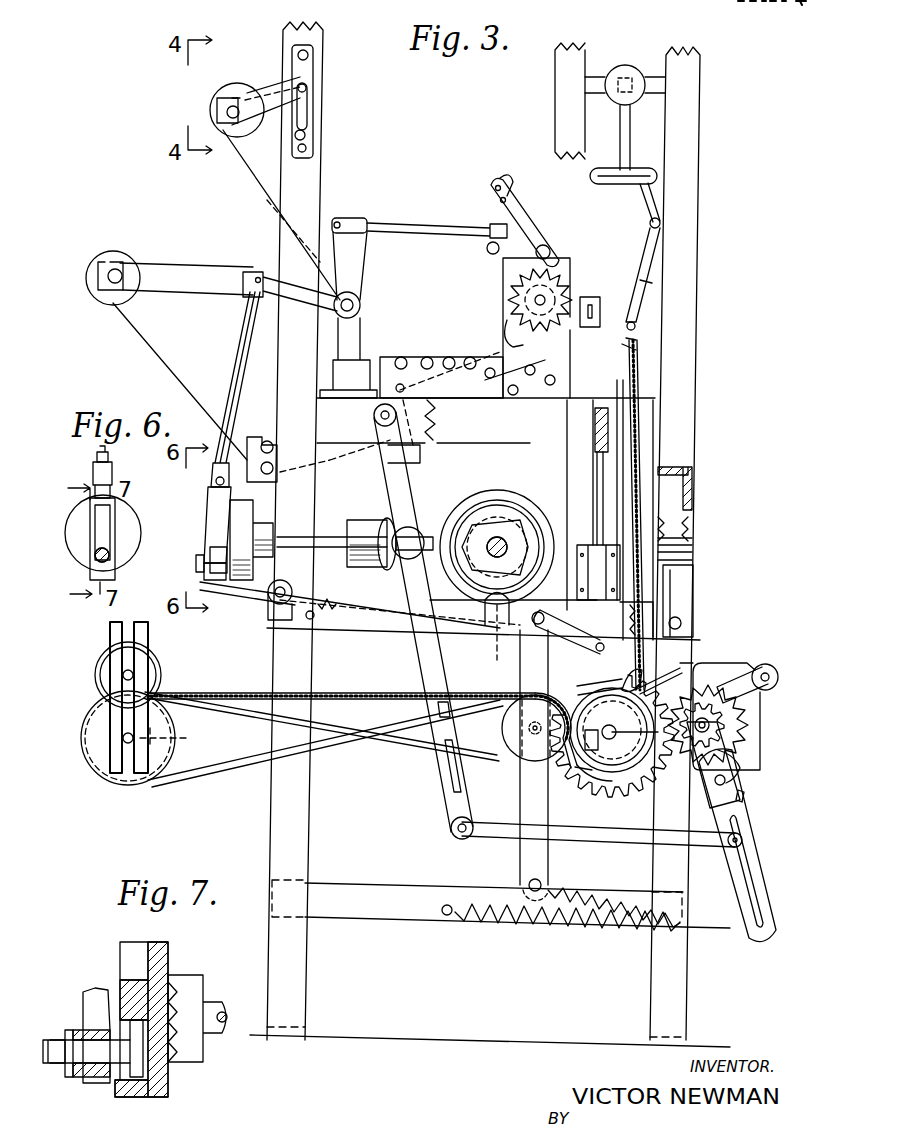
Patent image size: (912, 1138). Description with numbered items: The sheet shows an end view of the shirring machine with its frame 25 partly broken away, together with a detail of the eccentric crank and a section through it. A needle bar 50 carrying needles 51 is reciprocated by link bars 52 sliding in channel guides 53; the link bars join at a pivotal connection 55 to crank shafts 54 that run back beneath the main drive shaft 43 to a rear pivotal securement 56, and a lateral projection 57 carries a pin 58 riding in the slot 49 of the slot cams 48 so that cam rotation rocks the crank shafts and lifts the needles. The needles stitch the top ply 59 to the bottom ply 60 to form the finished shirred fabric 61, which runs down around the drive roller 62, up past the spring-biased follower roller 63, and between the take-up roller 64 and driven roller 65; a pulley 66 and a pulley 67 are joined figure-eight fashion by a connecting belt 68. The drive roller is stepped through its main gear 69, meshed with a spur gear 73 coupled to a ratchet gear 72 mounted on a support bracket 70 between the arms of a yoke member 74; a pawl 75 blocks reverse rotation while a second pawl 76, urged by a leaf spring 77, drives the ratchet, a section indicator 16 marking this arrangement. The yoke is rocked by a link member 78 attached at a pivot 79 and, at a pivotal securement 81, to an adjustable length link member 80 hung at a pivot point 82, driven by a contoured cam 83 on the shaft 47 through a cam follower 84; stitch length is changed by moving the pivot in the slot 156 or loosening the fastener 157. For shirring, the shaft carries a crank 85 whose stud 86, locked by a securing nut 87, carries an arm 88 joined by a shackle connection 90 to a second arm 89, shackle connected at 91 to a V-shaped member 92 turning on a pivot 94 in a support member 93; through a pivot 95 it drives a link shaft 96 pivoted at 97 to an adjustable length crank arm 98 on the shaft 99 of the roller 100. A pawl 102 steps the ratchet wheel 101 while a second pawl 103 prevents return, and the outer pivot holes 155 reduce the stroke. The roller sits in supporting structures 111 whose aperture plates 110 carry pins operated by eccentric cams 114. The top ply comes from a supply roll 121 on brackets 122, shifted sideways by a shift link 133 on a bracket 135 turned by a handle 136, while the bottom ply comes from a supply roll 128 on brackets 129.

In FIG. 3, the drum 16 is at (790, 665).
In FIG. 3, the frame 25 is at (680, 410).
In FIG. 3, the main drive shaft 43 is at (497, 537).
In FIG. 3, the shaft 47 is at (333, 543).
In FIG. 7, the shaft 47 is at (212, 1005).
In FIG. 3, the slot cams 48 is at (477, 497).
In FIG. 3, the cam slot 49 is at (535, 528).
In FIG. 3, the needle bar 50 is at (585, 445).
In FIG. 3, the needles 51 is at (590, 395).
In FIG. 3, the link bars 52 is at (592, 488).
In FIG. 3, the channel guides 53 is at (598, 572).
In FIG. 3, the crank shafts 54 is at (390, 628).
In FIG. 3, the pivotal connection 55 is at (596, 652).
In FIG. 3, the pivotal securement 56 is at (272, 606).
In FIG. 3, the crank shaft lateral projection 57 is at (470, 640).
In FIG. 3, the pin 58 is at (500, 630).
In FIG. 3, the top ply of fabric 59 is at (400, 360).
In FIG. 3, the bottom ply of fabric 60 is at (318, 462).
In FIG. 3, the finished shirred fabric 61 is at (640, 370).
In FIG. 3, the drive roller 62 is at (612, 682).
In FIG. 3, the follower roller 63 is at (518, 748).
In FIG. 3, the take-up roller 64 is at (150, 660).
In FIG. 3, the driven roller 65 is at (160, 730).
In FIG. 3, the pulley 66 is at (648, 685).
In FIG. 3, the pulley 67 is at (95, 752).
In FIG. 3, the connecting belt 68 is at (345, 745).
In FIG. 3, the main gear 69 is at (598, 798).
In FIG. 3, the support bracket 70 is at (715, 662).
In FIG. 3, the ratchet gear 72 is at (735, 710).
In FIG. 3, the spur gear 73 is at (735, 730).
In FIG. 3, the yoke member 74 is at (768, 890).
In FIG. 3, the pawl 75 is at (756, 672).
In FIG. 3, the second pawl 76 is at (728, 781).
In FIG. 3, the leaf spring 77 is at (745, 800).
In FIG. 3, the link member 78 is at (600, 845).
In FIG. 3, the pivot 79 is at (745, 838).
In FIG. 3, the adjustable length link member 80 is at (418, 655).
In FIG. 3, the pivotal securement 81 is at (460, 840).
In FIG. 3, the pivot point 82 is at (373, 417).
In FIG. 3, the contoured cam 83 is at (368, 570).
In FIG. 3, the cam follower 84 is at (415, 512).
In FIG. 3, the crank 85 is at (210, 510).
In FIG. 6, the crank 85 is at (128, 530).
In FIG. 7, the crank 85 is at (168, 960).
In FIG. 3, the stud 86 is at (196, 565).
In FIG. 7, the stud 86 is at (45, 1065).
In FIG. 6, the securing nut 87 is at (95, 560).
In FIG. 7, the securing nut 87 is at (60, 1035).
In FIG. 3, the arm 88 is at (200, 530).
In FIG. 6, the arm 88 is at (90, 540).
In FIG. 7, the arm 88 is at (95, 1000).
In FIG. 3, the second arm 89 is at (232, 348).
In FIG. 6, the second arm 89 is at (95, 456).
In FIG. 3, the shackle connection 90 is at (214, 483).
In FIG. 6, the shackle connection 90 is at (92, 471).
In FIG. 3, the shackle connection 91 is at (253, 270).
In FIG. 3, the V-shaped member 92 is at (348, 258).
In FIG. 3, the support member 93 is at (333, 368).
In FIG. 3, the pivot 94 is at (358, 298).
In FIG. 3, the pivot 95 is at (345, 216).
In FIG. 3, the link shaft 96 is at (408, 225).
In FIG. 3, the pivot 97 is at (560, 232).
In FIG. 3, the adjustable length crank arm 98 is at (535, 250).
In FIG. 3, the roller shaft 99 is at (500, 312).
In FIG. 3, the roller 100 is at (535, 298).
In FIG. 3, the ratchet wheel 101 is at (580, 280).
In FIG. 3, the pawl 102 is at (560, 262).
In FIG. 3, the second pawl 103 is at (500, 338).
In FIG. 3, the aperture plates 110 is at (500, 264).
In FIG. 3, the roller supporting structures 111 is at (508, 398).
In FIG. 3, the cams 114 is at (485, 250).
In FIG. 3, the supply roll 121 is at (226, 96).
In FIG. 3, the brackets 122 is at (262, 118).
In FIG. 3, the supply roll 128 is at (118, 250).
In FIG. 3, the brackets 129 is at (176, 268).
In FIG. 3, the shift link 133 is at (275, 85).
In FIG. 3, the bracket 135 is at (303, 62).
In FIG. 3, the handle 136 is at (315, 110).
In FIG. 3, the pivot holes 155 is at (507, 198).
In FIG. 3, the slot 156 is at (750, 868).
In FIG. 3, the fastener 157 is at (450, 735).